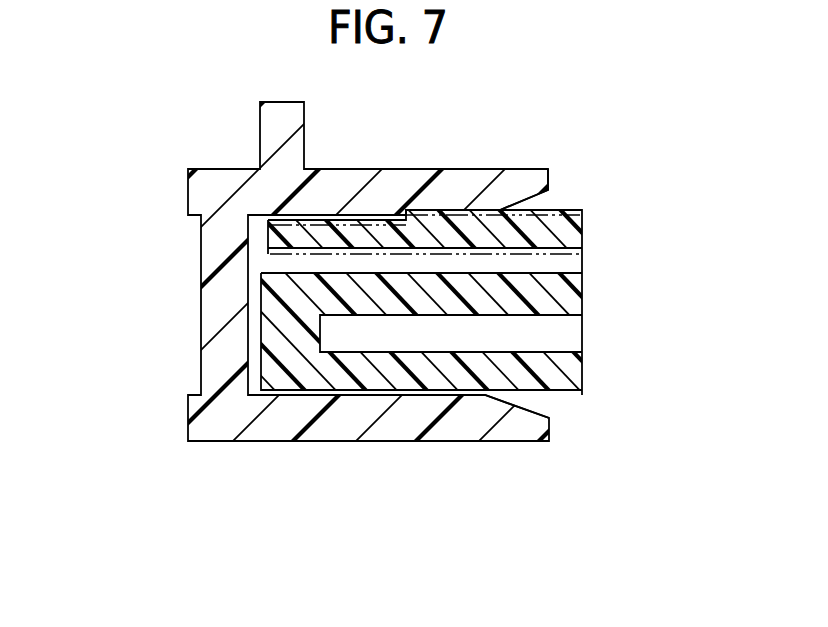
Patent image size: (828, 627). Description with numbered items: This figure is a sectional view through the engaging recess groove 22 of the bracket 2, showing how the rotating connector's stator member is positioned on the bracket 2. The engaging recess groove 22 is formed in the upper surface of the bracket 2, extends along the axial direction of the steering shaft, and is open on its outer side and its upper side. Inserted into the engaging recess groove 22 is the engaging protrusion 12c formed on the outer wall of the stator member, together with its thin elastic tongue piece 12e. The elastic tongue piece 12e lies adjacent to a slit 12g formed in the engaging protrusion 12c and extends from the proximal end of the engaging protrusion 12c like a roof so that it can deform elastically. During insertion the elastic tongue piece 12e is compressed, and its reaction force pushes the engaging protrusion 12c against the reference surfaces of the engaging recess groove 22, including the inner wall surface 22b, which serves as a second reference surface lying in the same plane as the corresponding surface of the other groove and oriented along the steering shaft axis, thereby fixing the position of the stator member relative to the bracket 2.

The bracket 2 is at (205, 178).
The engaging recess groove 22 is at (547, 201).
The inner wall surface 22b is at (469, 395).
The elastic tongue piece 12e is at (566, 222).
The slit 12g is at (567, 262).
The engaging protrusion 12c is at (565, 297).